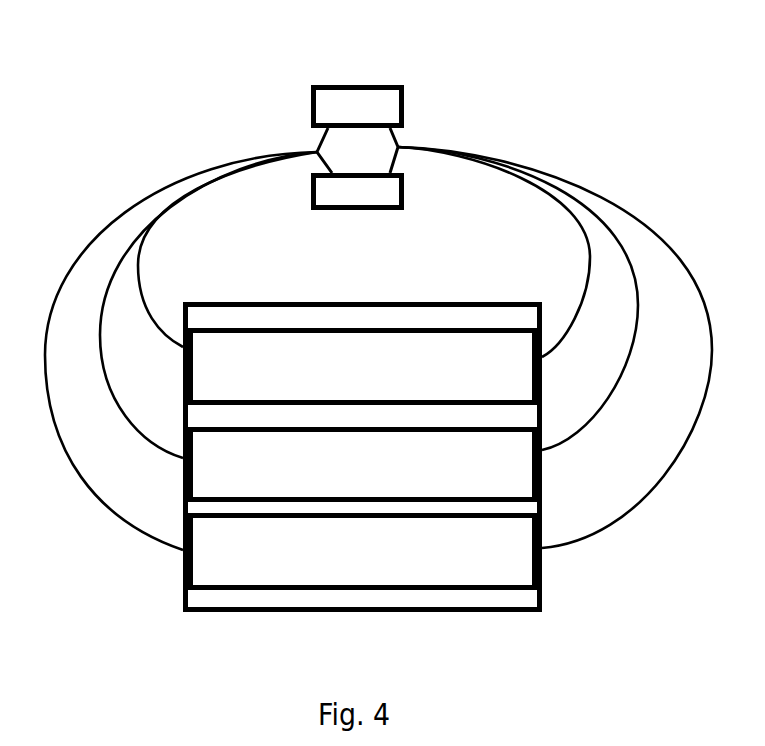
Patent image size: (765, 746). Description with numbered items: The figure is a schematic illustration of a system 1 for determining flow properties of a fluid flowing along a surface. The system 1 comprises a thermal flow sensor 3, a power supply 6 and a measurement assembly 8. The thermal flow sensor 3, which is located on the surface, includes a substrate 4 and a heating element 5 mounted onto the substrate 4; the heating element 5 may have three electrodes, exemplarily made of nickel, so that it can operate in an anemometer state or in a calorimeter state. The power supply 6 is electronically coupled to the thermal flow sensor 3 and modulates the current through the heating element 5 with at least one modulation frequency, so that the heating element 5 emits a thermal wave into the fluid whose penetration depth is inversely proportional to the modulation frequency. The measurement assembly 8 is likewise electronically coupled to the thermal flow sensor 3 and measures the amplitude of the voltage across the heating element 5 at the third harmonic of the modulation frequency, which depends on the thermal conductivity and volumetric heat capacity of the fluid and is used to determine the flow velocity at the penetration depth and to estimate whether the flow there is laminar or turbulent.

The system 1 is at (575, 105).
The thermal flow sensor 3 is at (413, 285).
The substrate 4 is at (230, 310).
The heating element 5 is at (542, 387).
The power supply 6 is at (320, 98).
The measurement assembly 8 is at (345, 198).